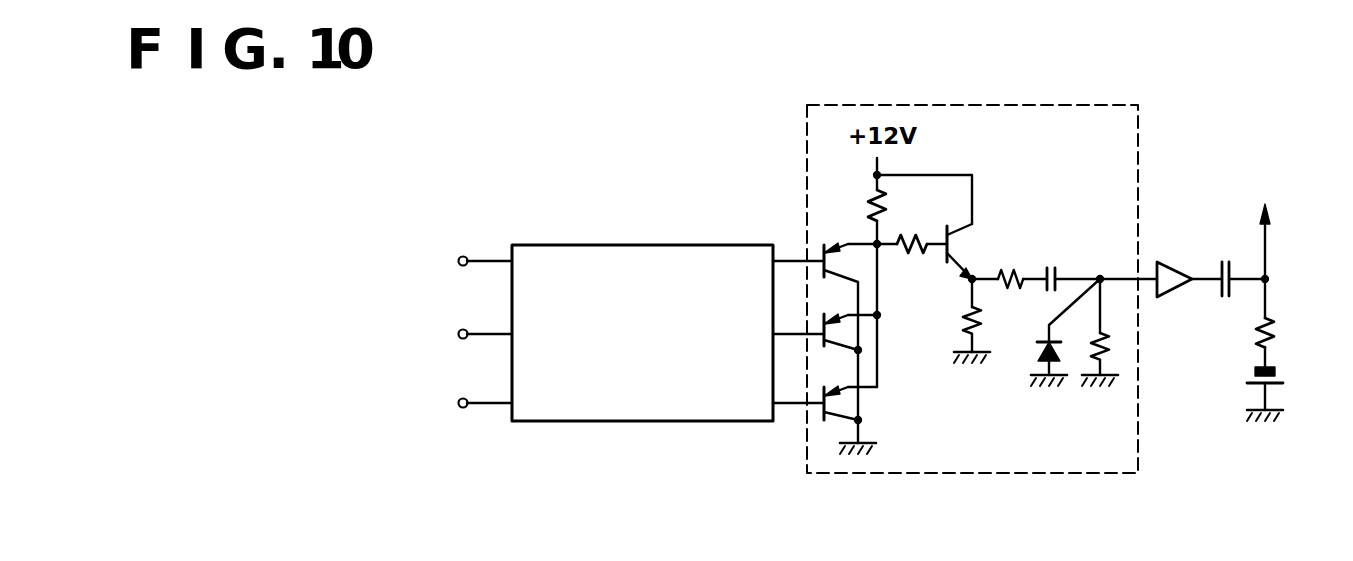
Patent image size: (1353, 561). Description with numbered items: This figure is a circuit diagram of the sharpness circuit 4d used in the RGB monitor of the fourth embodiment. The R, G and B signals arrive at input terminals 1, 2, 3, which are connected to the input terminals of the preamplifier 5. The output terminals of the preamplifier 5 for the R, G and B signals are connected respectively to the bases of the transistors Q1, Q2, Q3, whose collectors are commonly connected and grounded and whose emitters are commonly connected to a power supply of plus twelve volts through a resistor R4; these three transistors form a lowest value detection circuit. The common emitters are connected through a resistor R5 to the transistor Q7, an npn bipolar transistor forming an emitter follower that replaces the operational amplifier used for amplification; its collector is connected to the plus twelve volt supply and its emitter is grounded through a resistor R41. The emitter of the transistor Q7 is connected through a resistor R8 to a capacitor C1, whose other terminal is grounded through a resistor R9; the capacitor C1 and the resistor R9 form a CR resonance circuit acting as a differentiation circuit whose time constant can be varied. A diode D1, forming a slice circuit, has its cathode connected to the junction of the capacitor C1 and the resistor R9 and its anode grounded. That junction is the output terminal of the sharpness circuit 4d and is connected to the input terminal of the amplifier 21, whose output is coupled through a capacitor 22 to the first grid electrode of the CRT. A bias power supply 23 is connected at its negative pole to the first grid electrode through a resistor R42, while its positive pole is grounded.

The input terminal 1 is at (466, 258).
The input terminal 2 is at (466, 331).
The input terminal 3 is at (466, 400).
The preamplifier 5 is at (638, 245).
The sharpness circuit 4d is at (985, 474).
The amplifier 21 is at (1177, 268).
The capacitor 22 is at (1220, 290).
The bias power supply 23 is at (1253, 371).
The transistor Q1 is at (841, 328).
The transistor Q2 is at (841, 322).
The transistor Q3 is at (841, 393).
The transistor Q7 is at (953, 243).
The resistor R4 is at (857, 213).
The resistor R5 is at (912, 263).
The resistor R8 is at (1009, 266).
The resistor R9 is at (1108, 332).
The resistor R41 is at (954, 321).
The resistor R42 is at (1289, 323).
The capacitor C1 is at (1098, 267).
The diode D1 is at (1052, 332).